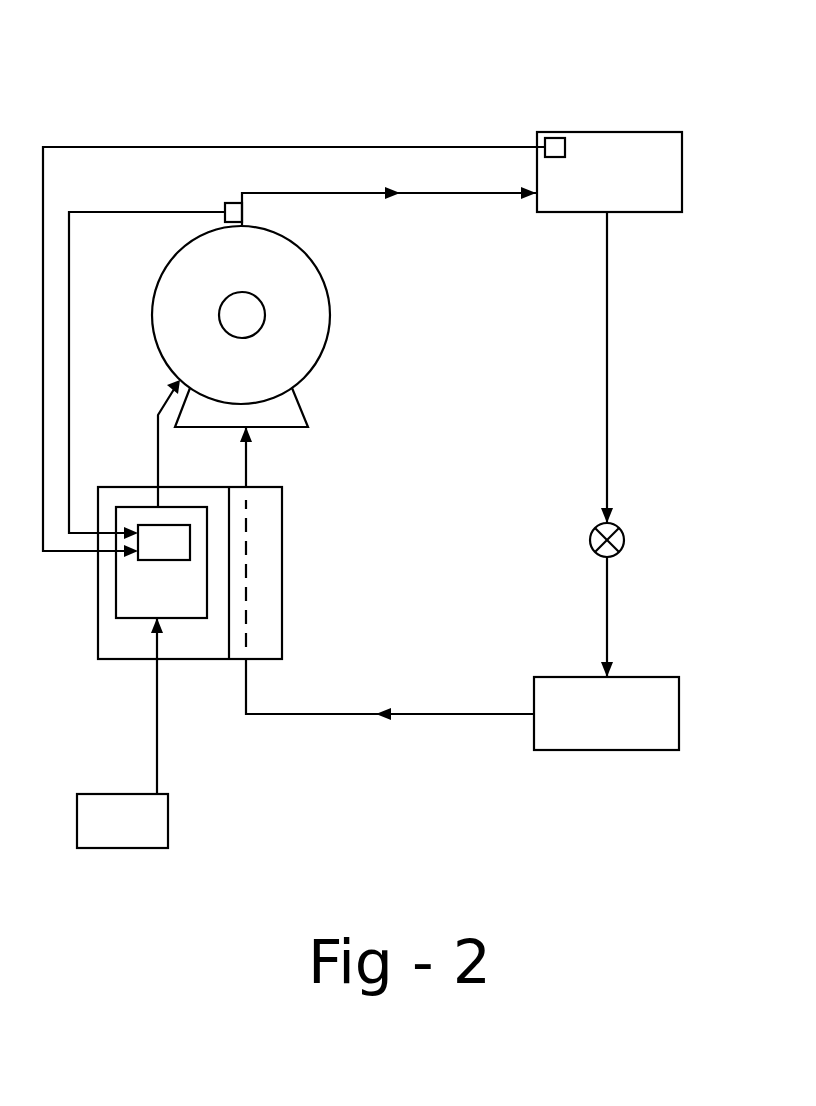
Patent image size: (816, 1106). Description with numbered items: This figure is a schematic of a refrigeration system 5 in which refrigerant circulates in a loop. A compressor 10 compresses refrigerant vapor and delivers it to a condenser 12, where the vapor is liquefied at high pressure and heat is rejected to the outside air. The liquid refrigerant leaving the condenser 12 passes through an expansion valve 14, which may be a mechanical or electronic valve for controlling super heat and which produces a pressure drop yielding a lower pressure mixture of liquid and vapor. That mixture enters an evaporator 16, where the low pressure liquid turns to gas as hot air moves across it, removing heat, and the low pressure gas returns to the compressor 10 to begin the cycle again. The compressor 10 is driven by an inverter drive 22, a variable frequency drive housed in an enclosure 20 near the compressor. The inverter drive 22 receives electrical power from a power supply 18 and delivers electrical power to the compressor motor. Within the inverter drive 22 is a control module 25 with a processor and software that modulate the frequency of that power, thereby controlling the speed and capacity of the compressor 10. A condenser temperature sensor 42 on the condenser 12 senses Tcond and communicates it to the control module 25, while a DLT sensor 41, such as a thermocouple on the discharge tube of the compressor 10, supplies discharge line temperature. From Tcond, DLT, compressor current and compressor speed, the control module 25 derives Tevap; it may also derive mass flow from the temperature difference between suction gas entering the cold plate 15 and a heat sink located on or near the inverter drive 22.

The refrigeration system 5 is at (229, 42).
The compressor 10 is at (333, 302).
The condenser 12 is at (596, 132).
The expansion valve 14 is at (620, 528).
The cold plate 15 is at (270, 580).
The evaporator 16 is at (648, 676).
The power supply 18 is at (169, 832).
The enclosure 20 is at (118, 660).
The inverter drive 22 is at (117, 598).
The control module 25 is at (157, 561).
The DLT sensor 41 is at (237, 203).
The condenser temperature sensor 42 is at (549, 136).